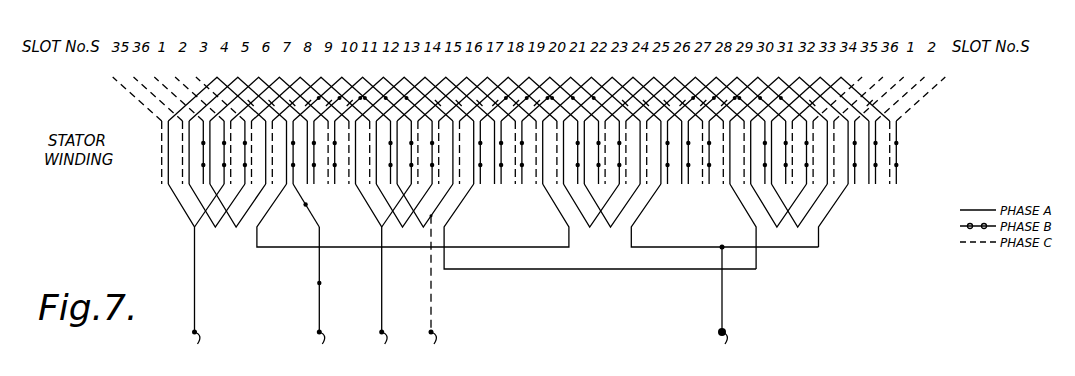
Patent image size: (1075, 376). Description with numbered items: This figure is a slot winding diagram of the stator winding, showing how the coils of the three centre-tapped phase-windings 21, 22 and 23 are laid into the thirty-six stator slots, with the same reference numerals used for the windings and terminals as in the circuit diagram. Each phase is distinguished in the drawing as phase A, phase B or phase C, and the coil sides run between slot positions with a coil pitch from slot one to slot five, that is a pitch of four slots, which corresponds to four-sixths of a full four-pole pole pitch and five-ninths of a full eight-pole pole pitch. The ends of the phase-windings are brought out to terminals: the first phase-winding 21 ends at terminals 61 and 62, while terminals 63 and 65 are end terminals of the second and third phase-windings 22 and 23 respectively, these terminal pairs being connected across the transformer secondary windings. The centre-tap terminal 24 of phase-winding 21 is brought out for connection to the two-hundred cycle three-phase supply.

The phase-winding 21 is at (370, 249).
The phase-winding 22 is at (311, 215).
The phase-winding 23 is at (433, 217).
The centre-tap terminal 24 is at (719, 307).
The terminal 61 is at (187, 276).
The terminal 62 is at (372, 276).
The terminal 63 is at (317, 297).
The terminal 65 is at (427, 292).